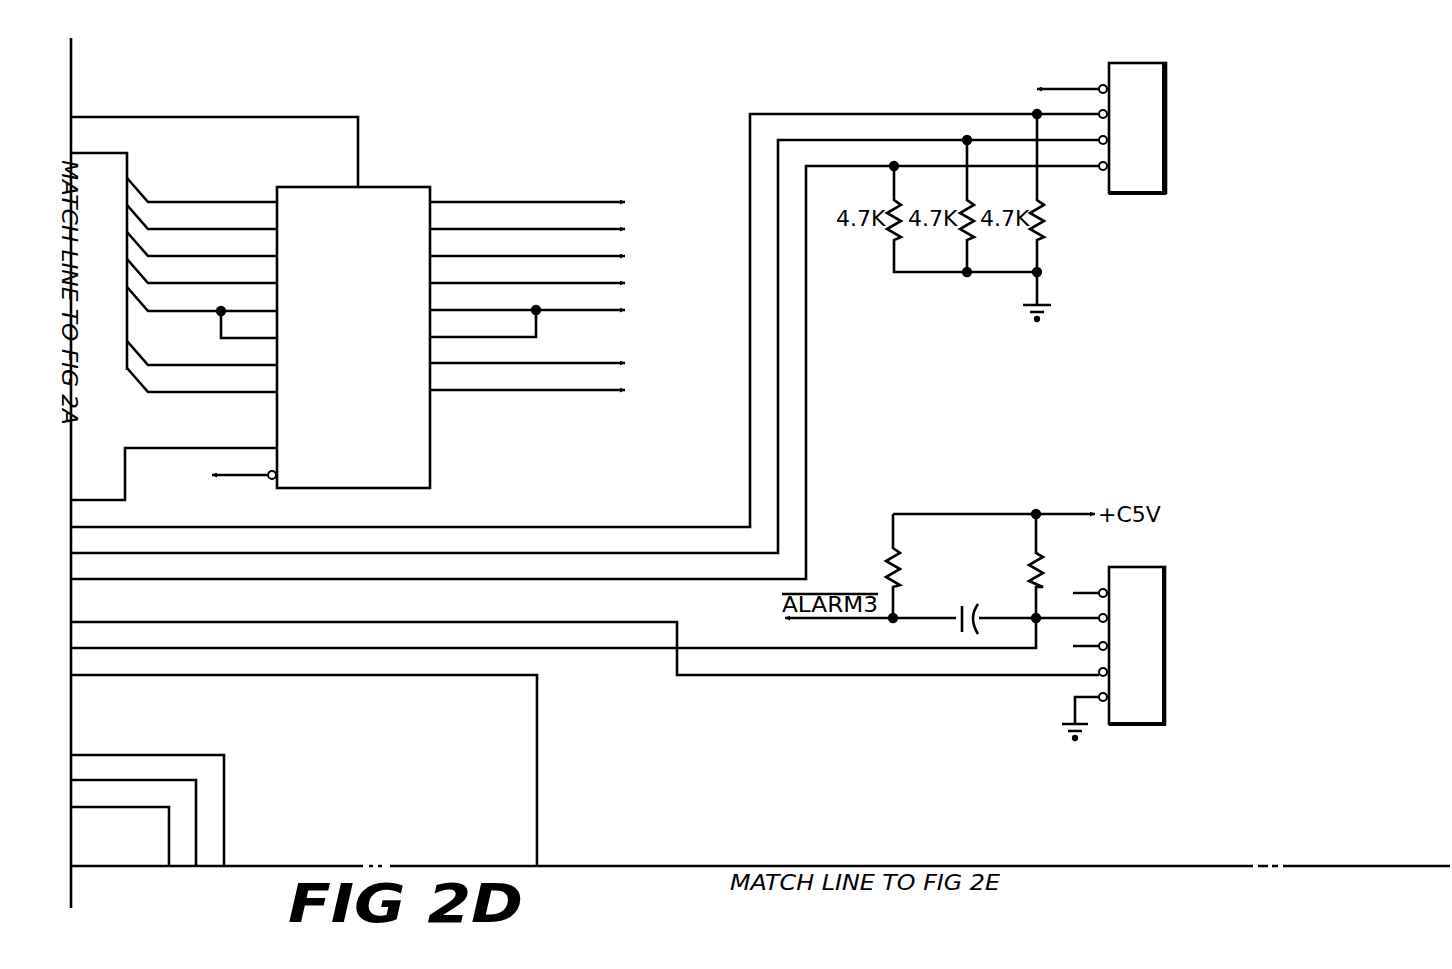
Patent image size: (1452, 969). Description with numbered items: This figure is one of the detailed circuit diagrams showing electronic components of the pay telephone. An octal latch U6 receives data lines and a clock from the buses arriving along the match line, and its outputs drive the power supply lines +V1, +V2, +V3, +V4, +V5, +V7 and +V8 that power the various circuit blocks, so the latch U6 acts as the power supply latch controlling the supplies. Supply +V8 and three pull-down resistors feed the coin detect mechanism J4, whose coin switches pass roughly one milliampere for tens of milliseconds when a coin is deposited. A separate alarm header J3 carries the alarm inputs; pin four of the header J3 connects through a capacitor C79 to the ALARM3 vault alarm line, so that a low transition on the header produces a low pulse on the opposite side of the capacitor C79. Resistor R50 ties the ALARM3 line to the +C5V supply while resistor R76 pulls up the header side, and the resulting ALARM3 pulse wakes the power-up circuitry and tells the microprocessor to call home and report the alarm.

The 74AC273 octal D flip-flop U6 is at (400, 348).
The coin detect mechanism J4 is at (1184, 131).
The header 5 alarms connector J3 is at (1190, 648).
The 22K resistor R50 is at (870, 566).
The 33K resistor R76 is at (1058, 566).
The capacitor C79 is at (996, 593).